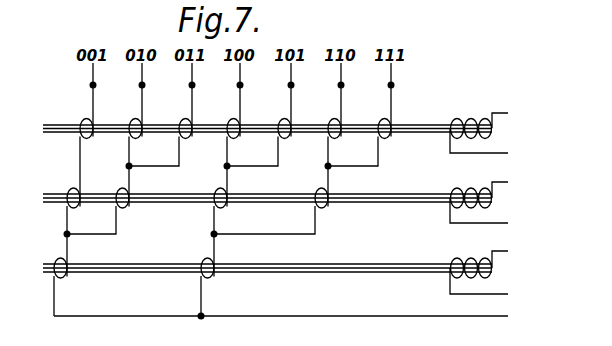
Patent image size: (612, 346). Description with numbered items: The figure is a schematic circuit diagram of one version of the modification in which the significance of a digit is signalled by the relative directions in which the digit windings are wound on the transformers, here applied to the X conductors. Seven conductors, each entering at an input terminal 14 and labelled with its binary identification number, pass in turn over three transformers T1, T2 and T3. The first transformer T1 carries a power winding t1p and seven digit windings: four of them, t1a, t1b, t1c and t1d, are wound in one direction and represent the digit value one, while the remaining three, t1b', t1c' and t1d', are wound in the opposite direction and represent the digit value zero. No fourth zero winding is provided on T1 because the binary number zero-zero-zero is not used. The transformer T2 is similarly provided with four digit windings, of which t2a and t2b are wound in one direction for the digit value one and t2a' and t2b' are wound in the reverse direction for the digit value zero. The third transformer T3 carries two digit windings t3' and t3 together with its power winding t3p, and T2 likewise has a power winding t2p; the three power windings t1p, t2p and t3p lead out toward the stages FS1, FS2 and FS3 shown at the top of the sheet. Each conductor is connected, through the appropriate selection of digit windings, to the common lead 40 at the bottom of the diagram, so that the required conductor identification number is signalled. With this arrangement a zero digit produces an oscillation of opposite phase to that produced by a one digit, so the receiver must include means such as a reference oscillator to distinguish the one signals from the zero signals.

The input terminal 14 is at (93, 77).
The common lead 40 is at (478, 317).
The first transformer T1 is at (265, 115).
The transformer T2 is at (262, 189).
The third tape/bus line T3 is at (262, 257).
The digit winding t1a is at (78, 152).
The digit winding t1b' is at (124, 152).
The digit winding t1b is at (160, 132).
The digit winding t1c' is at (222, 152).
The digit winding t1c is at (259, 132).
The digit winding t1d' is at (323, 152).
The digit winding t1d is at (359, 132).
The digit winding t2a' is at (66, 210).
The digit winding t2a is at (114, 205).
The digit winding t2b' is at (240, 226).
The digit winding t2b is at (290, 205).
The third stage winding t3' is at (69, 287).
The third stage winding t3 is at (212, 287).
The power winding t1p is at (477, 126).
The second output winding t2p is at (477, 197).
The third output winding t3p is at (477, 266).
The first flip-flop stage FS1 is at (373, 11).
The second flip-flop stage FS2 is at (443, 11).
The third flip-flop stage FS3 is at (515, 11).